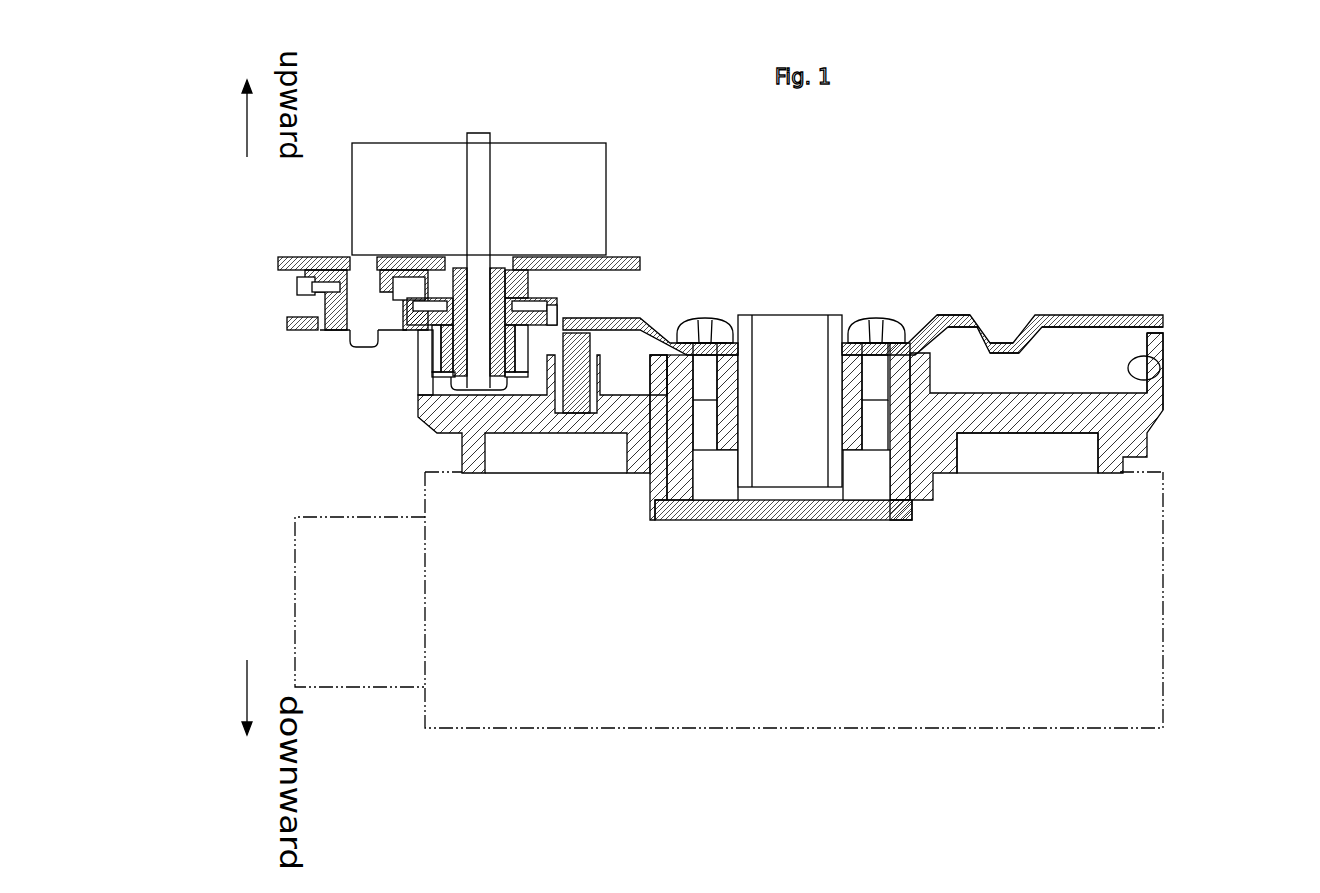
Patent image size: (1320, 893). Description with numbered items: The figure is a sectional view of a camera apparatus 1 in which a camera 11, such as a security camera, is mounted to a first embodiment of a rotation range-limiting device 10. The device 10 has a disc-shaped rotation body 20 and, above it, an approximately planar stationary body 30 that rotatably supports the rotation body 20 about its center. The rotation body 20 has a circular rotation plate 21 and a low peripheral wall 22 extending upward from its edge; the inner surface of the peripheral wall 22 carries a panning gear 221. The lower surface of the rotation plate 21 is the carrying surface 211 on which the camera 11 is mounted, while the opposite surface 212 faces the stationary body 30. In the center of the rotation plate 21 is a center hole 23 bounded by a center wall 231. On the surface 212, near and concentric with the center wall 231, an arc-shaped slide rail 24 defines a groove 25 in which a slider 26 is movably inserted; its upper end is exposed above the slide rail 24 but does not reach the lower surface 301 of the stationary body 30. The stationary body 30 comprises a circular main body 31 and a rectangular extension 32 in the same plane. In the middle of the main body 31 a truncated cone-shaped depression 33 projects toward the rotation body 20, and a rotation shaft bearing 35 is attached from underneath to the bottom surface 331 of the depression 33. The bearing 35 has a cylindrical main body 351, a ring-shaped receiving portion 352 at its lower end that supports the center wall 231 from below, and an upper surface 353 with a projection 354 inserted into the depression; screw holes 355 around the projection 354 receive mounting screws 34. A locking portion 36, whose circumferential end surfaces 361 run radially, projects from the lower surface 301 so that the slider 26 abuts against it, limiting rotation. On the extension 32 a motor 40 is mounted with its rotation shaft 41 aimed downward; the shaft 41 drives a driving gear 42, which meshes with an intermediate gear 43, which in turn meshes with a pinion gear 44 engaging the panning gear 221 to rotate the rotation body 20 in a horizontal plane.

The camera apparatus 1 is at (200, 543).
The rotation range-limiting device 10 is at (988, 142).
The camera 11 is at (1160, 598).
The rotation body 20 is at (796, 511).
The rotation plate 21 is at (1082, 376).
The carrying surface 211 is at (1060, 435).
The surface 212 is at (1093, 397).
The peripheral wall 22 is at (1165, 353).
The panning gear 221 is at (1160, 369).
The center hole 23 is at (688, 430).
The center wall 231 is at (658, 367).
The slide rail 24 is at (538, 383).
The groove 25 is at (552, 405).
The slider 26 is at (578, 408).
The stationary body 30 is at (910, 358).
The lower surface 301 is at (1052, 328).
The main body 31 is at (947, 330).
The extension 32 is at (292, 320).
The depression 33 is at (961, 575).
The bottom surface 331 is at (900, 352).
The mounting screw 34 is at (898, 338).
The rotation shaft bearing 35 is at (830, 553).
The main body 351 is at (717, 455).
The receiving portion 352 is at (662, 500).
The upper surface 353 is at (852, 333).
The projection 354 is at (748, 318).
The screw hole 355 is at (873, 437).
The locking portion 36 is at (1014, 336).
The circumferential end surface 361 is at (996, 342).
The motor 40 is at (556, 150).
The rotation shaft 41 is at (481, 297).
The driving gear 42 is at (446, 295).
The intermediate gear 43 is at (305, 288).
The pinion gear 44 is at (437, 365).